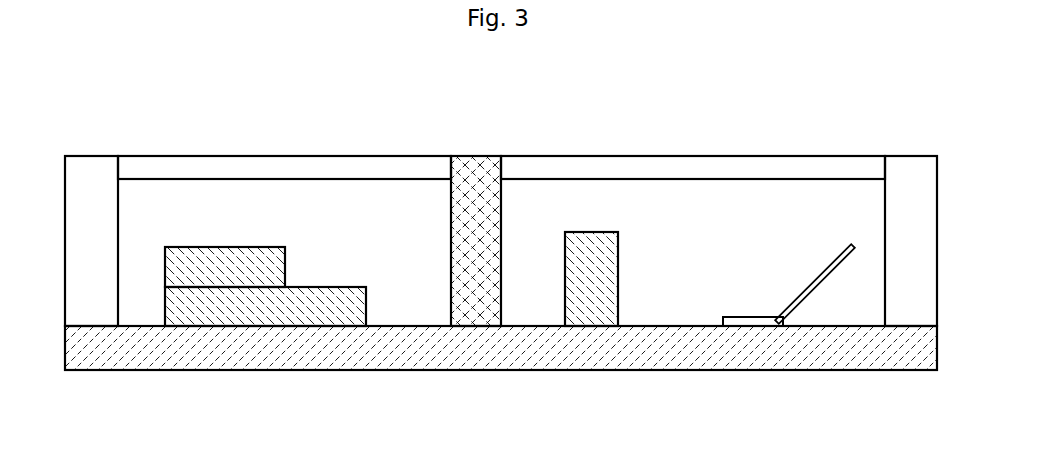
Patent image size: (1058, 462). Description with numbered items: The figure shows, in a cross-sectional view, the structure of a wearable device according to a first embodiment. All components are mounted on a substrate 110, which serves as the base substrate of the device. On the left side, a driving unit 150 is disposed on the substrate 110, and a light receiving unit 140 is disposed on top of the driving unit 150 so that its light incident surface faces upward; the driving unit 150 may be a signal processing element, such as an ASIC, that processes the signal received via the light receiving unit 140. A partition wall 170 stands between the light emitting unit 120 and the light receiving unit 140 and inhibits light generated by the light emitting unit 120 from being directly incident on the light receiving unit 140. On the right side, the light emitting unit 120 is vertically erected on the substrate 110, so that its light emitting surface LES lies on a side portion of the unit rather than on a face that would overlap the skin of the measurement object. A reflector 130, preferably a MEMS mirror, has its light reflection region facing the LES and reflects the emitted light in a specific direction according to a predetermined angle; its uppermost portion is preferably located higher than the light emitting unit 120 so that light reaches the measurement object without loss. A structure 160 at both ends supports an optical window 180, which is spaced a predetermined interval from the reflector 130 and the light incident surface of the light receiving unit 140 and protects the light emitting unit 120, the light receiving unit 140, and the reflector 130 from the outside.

The substrate 110 is at (415, 350).
The light emitting unit 120 is at (593, 308).
The reflector 130 is at (753, 322).
The light receiving unit 140 is at (202, 267).
The driving unit 150 is at (288, 308).
The structure 160 is at (913, 170).
The partition wall 170 is at (477, 168).
The optical window 180 is at (286, 167).
The light emitting surface LES is at (620, 255).